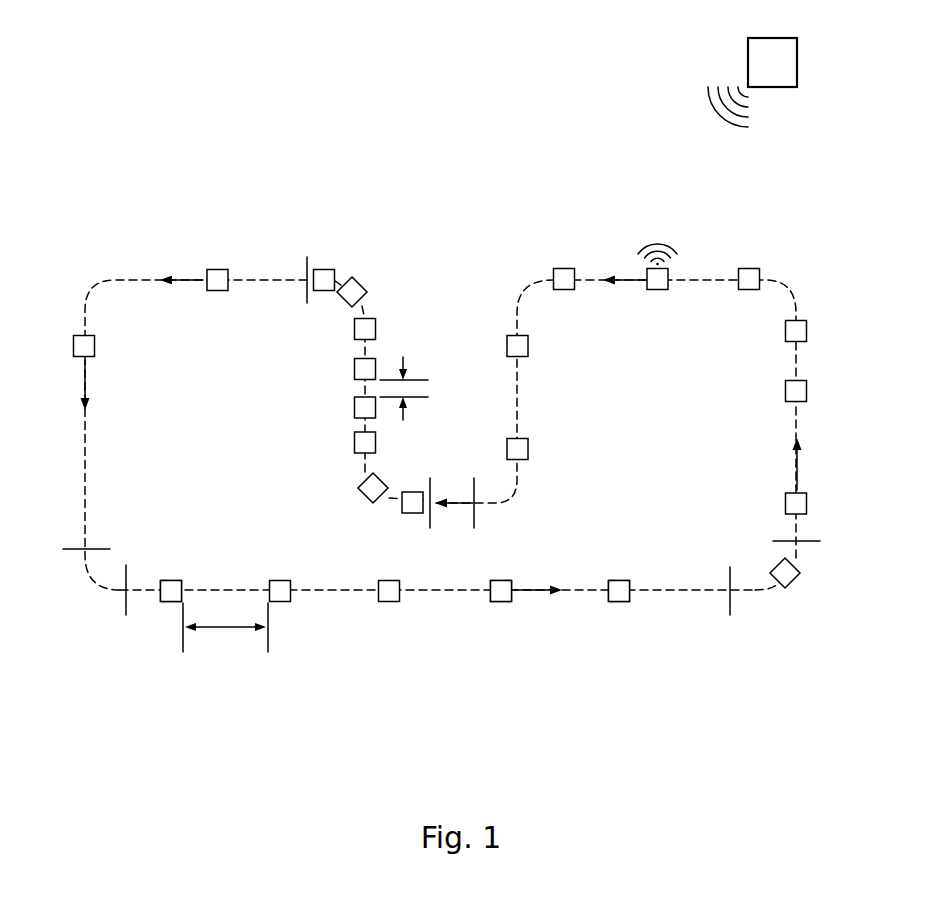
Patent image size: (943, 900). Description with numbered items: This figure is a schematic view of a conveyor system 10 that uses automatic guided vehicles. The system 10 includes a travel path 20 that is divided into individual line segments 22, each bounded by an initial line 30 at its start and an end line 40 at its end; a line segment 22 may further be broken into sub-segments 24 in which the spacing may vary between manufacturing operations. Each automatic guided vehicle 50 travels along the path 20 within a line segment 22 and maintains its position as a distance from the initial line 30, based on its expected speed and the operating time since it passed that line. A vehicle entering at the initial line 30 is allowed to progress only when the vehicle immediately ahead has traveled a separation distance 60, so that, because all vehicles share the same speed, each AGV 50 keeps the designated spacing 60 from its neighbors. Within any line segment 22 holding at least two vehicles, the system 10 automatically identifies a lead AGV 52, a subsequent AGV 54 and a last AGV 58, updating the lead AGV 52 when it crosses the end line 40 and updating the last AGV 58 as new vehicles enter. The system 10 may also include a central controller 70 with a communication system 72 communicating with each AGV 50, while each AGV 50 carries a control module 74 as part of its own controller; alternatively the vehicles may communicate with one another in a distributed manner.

The system 10 is at (220, 182).
The travel path 20 is at (347, 592).
The line segment 22 is at (132, 280).
The sub-segment 24 is at (255, 280).
The initial line 30 is at (307, 262).
The end line 40 is at (309, 274).
The automatic guided vehicle 50 is at (220, 270).
The lead AGV 52 is at (620, 602).
The subsequent AGV 54 is at (170, 587).
The last AGV 58 is at (163, 580).
The separation distance 60 is at (403, 388).
The central controller 70 is at (778, 87).
The communication system 72 is at (765, 38).
The control module 74 is at (653, 290).